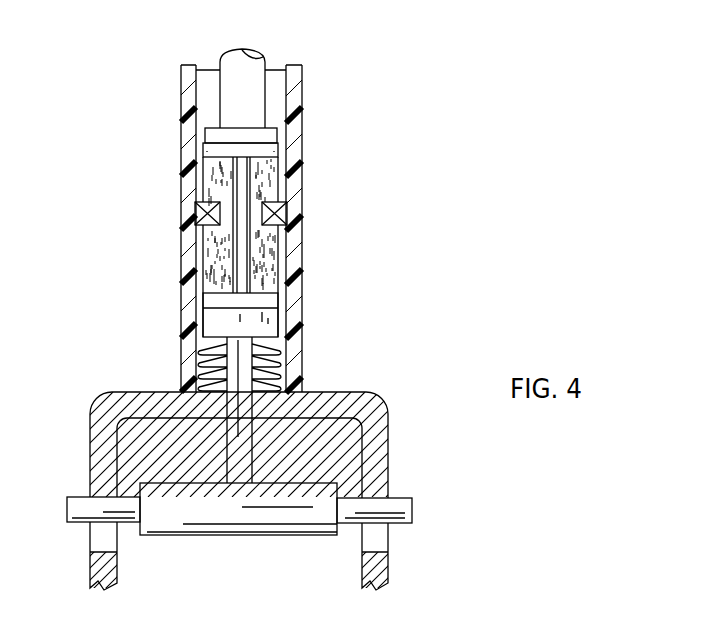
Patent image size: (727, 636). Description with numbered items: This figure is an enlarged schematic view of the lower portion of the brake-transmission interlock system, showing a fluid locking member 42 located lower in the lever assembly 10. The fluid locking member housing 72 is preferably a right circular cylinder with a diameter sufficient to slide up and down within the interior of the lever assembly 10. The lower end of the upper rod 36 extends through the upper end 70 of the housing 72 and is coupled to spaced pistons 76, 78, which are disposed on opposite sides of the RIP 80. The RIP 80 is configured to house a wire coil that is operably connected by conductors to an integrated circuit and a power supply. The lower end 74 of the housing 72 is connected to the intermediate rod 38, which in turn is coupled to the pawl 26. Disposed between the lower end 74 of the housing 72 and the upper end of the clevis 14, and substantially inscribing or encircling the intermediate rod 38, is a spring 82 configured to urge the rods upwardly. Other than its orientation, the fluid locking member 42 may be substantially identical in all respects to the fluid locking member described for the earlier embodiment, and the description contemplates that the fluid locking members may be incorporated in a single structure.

The lever assembly 10 is at (420, 245).
The clevis 14 is at (385, 437).
The pawl 26 is at (82, 495).
The upper rod 36 is at (240, 50).
The intermediate rod 38 is at (245, 470).
The fluid locking member 42 is at (293, 185).
The upper end of the housing 70 is at (270, 133).
The housing 72 is at (287, 242).
The lower end of the housing 74 is at (280, 340).
The piston 76 is at (213, 145).
The piston 78 is at (213, 300).
The RIP 80 is at (207, 203).
The spring 82 is at (283, 382).